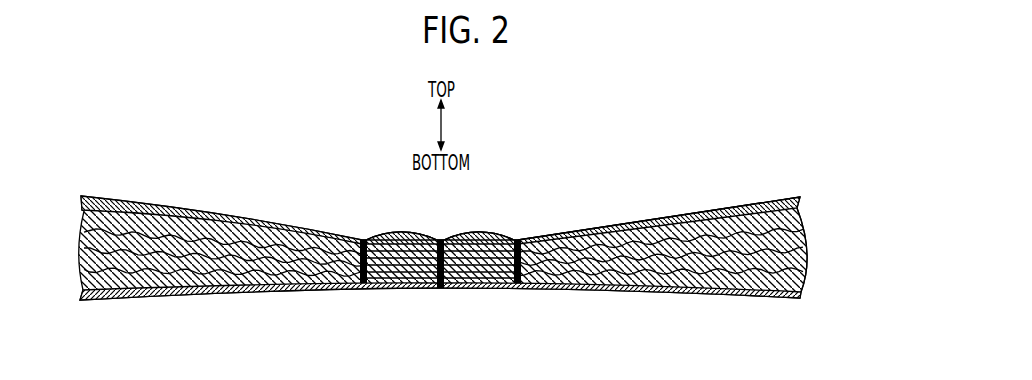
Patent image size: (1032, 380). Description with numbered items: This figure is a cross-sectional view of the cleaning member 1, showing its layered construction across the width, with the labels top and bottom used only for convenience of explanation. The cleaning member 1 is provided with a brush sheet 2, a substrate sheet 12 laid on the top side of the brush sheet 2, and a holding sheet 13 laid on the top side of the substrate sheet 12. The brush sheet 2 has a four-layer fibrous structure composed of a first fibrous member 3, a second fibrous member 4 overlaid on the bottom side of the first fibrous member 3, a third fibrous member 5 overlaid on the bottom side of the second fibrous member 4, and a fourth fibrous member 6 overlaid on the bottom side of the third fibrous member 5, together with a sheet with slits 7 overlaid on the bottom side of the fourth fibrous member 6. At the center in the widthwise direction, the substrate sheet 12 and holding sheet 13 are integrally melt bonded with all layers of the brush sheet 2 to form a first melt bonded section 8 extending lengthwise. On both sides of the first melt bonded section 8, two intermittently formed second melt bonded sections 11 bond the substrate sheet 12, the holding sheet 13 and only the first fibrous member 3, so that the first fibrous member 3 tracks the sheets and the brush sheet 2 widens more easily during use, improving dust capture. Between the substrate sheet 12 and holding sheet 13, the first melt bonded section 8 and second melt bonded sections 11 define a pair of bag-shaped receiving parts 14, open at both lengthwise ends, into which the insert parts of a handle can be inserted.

The cleaning member 1 is at (642, 167).
The brush sheet 2 is at (481, 230).
The first fibrous member 3 is at (804, 222).
The second fibrous member 4 is at (807, 241).
The third fibrous member 5 is at (808, 265).
The fourth fibrous member 6 is at (807, 283).
The sheet with slits 7 is at (802, 297).
The first melt bonded section 8 is at (440, 240).
The second melt bonded sections 11 is at (363, 240).
The substrate sheet 12 is at (802, 202).
The holding sheet 13 is at (780, 197).
The receiving parts 14 is at (400, 240).